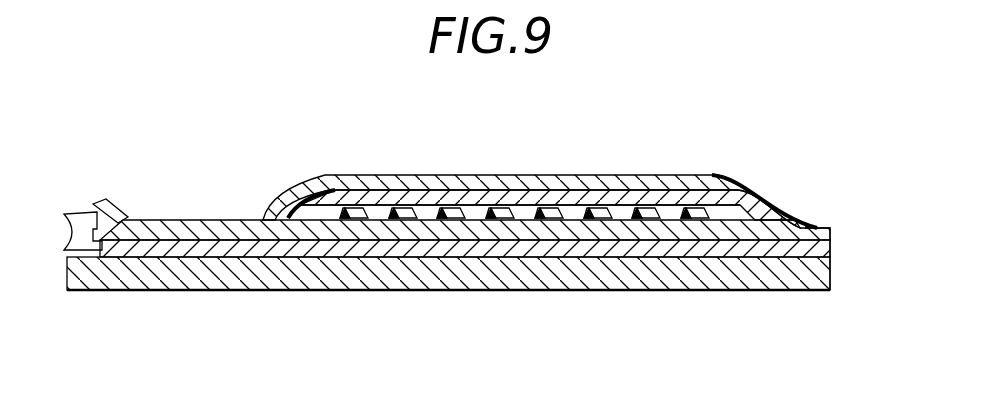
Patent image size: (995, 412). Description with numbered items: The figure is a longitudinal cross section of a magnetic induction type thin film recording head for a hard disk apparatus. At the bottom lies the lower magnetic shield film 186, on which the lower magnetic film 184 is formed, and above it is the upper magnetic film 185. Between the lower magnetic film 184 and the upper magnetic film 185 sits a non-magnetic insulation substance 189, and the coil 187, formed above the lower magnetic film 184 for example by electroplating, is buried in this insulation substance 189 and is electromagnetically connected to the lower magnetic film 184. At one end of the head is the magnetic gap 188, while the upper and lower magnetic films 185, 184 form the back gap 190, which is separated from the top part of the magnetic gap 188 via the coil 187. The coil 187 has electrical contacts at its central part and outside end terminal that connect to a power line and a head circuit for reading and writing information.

The lower magnetic film 184 is at (722, 245).
The upper magnetic film 185 is at (712, 186).
The lower magnetic shield film 186 is at (358, 270).
The coil 187 is at (444, 207).
The magnetic gap 188 is at (829, 228).
The non-magnetic insulation substance 189 is at (334, 200).
The back gap 190 is at (190, 235).